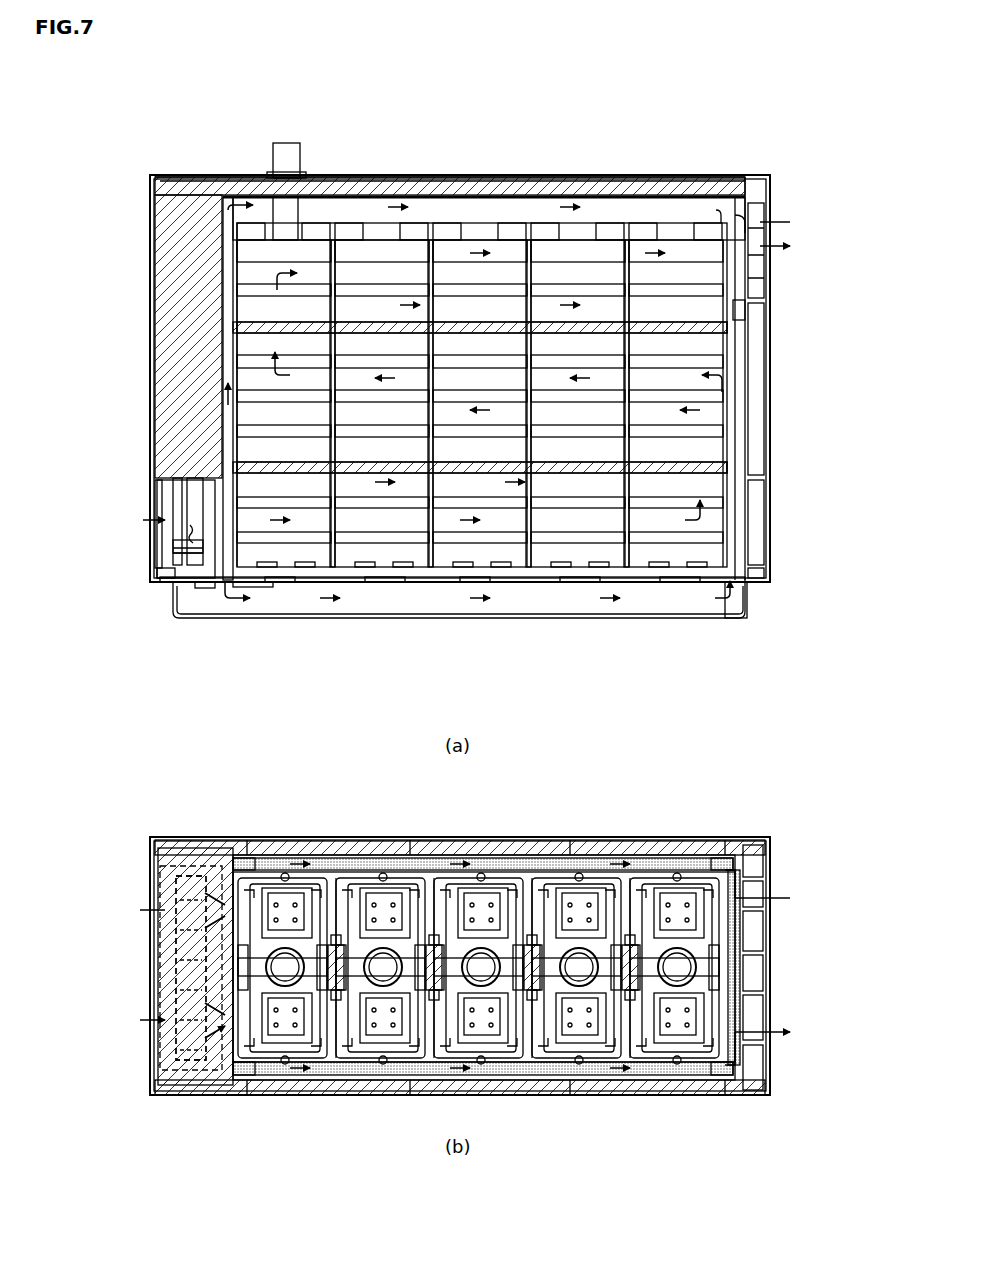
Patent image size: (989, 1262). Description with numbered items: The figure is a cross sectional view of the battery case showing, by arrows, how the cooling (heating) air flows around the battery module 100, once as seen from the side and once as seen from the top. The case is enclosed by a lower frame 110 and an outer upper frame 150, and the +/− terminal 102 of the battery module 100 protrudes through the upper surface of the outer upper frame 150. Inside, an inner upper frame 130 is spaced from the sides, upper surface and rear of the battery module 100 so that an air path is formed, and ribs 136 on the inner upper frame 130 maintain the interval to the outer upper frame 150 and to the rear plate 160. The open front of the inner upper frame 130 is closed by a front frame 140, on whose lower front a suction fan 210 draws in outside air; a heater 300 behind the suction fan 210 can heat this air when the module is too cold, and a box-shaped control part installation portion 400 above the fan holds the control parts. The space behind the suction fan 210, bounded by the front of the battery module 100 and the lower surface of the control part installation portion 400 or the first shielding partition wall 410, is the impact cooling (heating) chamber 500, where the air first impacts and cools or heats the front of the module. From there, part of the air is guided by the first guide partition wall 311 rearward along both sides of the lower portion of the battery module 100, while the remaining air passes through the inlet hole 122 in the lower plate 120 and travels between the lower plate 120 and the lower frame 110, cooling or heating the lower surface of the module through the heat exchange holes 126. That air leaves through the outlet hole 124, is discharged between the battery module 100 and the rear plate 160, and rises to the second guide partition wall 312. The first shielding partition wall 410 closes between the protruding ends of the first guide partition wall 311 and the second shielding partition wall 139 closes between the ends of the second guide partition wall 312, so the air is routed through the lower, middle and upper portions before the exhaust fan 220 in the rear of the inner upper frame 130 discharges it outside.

The battery module 100 is at (436, 252).
The +/− terminal 102 is at (288, 143).
The lower frame 110 is at (342, 618).
The lower plate 120 is at (253, 585).
The inlet hole 122 is at (205, 585).
The outlet hole 124 is at (738, 582).
The heat exchange holes 126 is at (385, 582).
The inner upper frame 130 is at (558, 192).
The rib 136 is at (760, 466).
The second shielding partition wall 139 is at (740, 312).
The front frame 140 is at (158, 240).
The outer upper frame 150 is at (212, 175).
The rear plate 160 is at (768, 380).
The suction fan 210 is at (162, 504).
The exhaust fan 220 is at (756, 222).
The heater 300 is at (185, 552).
The first guide partition wall 311 is at (510, 473).
The second guide partition wall 312 is at (593, 328).
The control part installation portion 400 is at (180, 295).
The first shielding partition wall 410 is at (232, 460).
The impact cooling (heating) chamber 500 is at (188, 532).